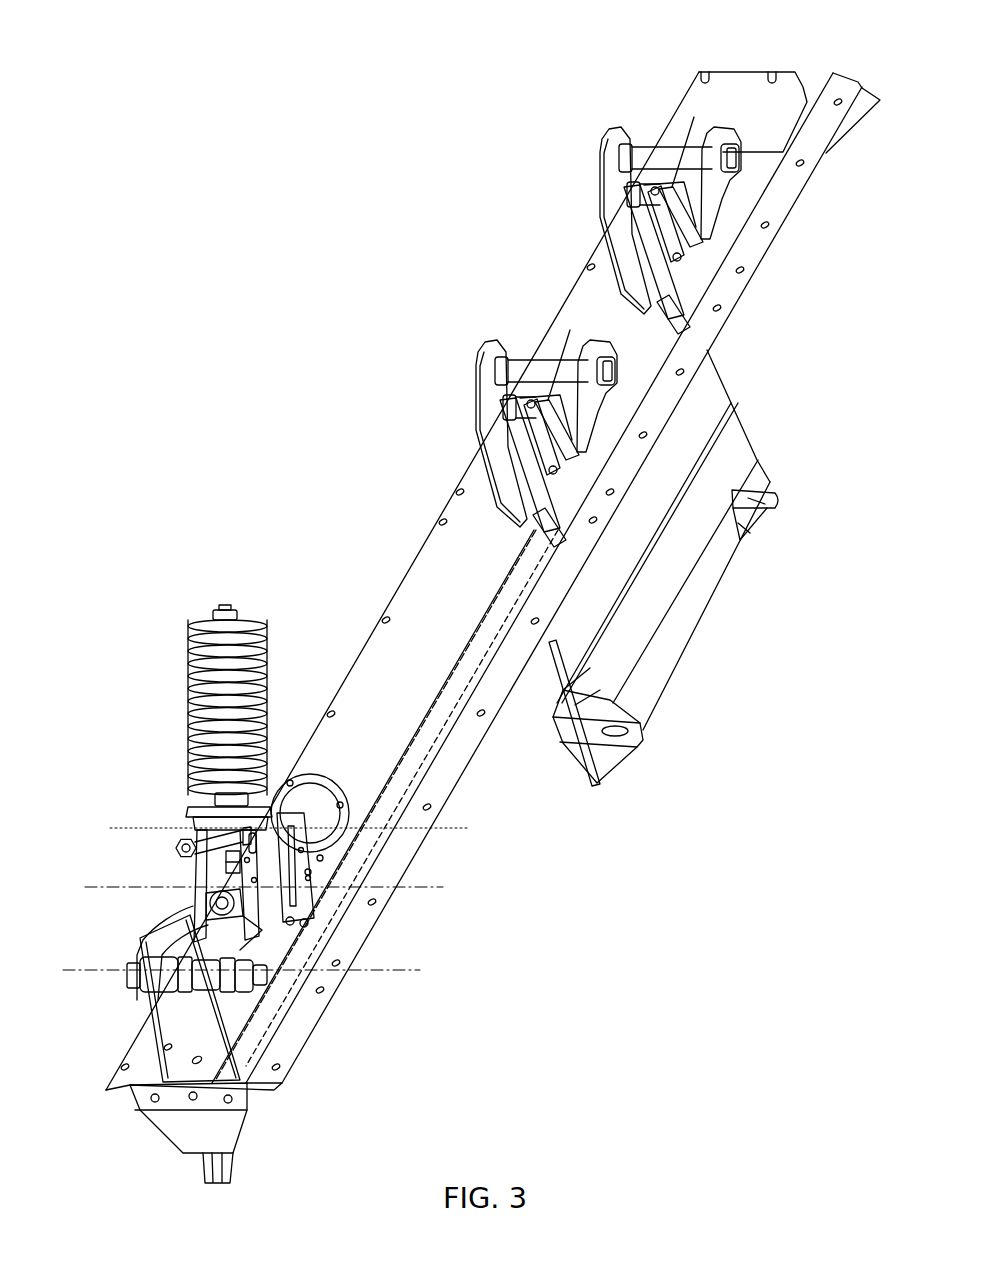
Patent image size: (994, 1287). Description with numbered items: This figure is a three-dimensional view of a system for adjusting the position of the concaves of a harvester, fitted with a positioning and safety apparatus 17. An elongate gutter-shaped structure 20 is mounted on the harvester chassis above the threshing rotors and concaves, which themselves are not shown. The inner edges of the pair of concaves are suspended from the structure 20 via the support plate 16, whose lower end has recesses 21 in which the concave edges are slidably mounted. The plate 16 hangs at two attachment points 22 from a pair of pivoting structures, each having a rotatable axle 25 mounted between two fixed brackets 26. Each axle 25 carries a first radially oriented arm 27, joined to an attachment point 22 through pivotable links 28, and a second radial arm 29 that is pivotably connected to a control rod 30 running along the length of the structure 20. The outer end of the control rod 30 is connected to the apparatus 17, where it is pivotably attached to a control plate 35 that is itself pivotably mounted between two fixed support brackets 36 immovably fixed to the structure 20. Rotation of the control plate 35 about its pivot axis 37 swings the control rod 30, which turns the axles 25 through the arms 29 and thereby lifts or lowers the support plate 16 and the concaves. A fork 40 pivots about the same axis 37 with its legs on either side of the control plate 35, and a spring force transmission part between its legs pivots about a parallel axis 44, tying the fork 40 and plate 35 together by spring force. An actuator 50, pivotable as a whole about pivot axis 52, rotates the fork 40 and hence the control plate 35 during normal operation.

The support plate 16 is at (703, 392).
The positioning and safety apparatus 17 is at (301, 781).
The gutter-shaped structure 20 is at (442, 773).
The recesses 21 is at (750, 500).
The attachment points 22 is at (497, 478).
The rotatable axle 25 is at (657, 147).
The fixed brackets 26 is at (600, 170).
The first radially oriented arm 27 is at (680, 167).
The pivotable links 28 is at (670, 237).
The second radial arm 29 is at (690, 205).
The control rod 30 is at (500, 607).
The control plate 35 is at (223, 1012).
The fixed support brackets 36 is at (153, 998).
The pivot axis 37 is at (403, 975).
The fork 40 is at (213, 940).
The pivot axis 44 is at (423, 888).
The actuator 50 is at (290, 765).
The pivot axis 52 is at (452, 828).